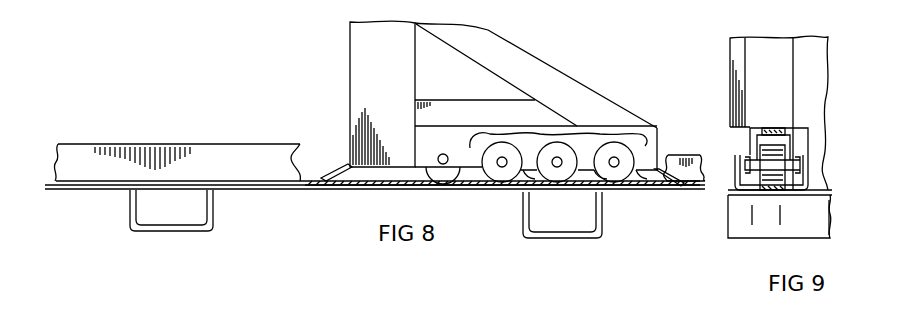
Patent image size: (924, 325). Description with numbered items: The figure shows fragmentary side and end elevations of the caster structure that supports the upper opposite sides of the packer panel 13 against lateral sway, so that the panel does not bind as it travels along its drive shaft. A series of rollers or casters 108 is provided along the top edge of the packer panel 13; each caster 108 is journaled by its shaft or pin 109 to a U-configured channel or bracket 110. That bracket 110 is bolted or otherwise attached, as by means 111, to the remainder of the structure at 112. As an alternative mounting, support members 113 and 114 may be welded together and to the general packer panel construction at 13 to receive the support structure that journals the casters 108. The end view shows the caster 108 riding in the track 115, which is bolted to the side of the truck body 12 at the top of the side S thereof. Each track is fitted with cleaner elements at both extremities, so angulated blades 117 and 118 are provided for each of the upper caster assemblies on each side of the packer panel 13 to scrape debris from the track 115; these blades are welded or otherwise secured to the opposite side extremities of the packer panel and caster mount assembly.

In FIG. 8, the packer panel 13 is at (367, 43).
In FIG. 8, the support member 113 is at (530, 62).
In FIG. 9, the support member 113 is at (758, 53).
In FIG. 8, the support member 114 is at (447, 108).
In FIG. 8, the remainder of the structure 112 is at (587, 130).
In FIG. 8, the angulated blade 117 is at (336, 166).
In FIG. 8, the angulated blade 118 is at (664, 170).
In FIG. 8, the caster 108 is at (502, 182).
In FIG. 9, the caster 108 is at (738, 205).
In FIG. 8, the shaft or pin 109 is at (616, 164).
In FIG. 9, the U-configured channel or bracket 110 is at (757, 138).
In FIG. 9, the attachment means 111 is at (773, 128).
In FIG. 9, the track 115 is at (797, 200).
In FIG. 9, the truck body 12 is at (830, 233).
In FIG. 9, the side of the truck body S is at (757, 212).